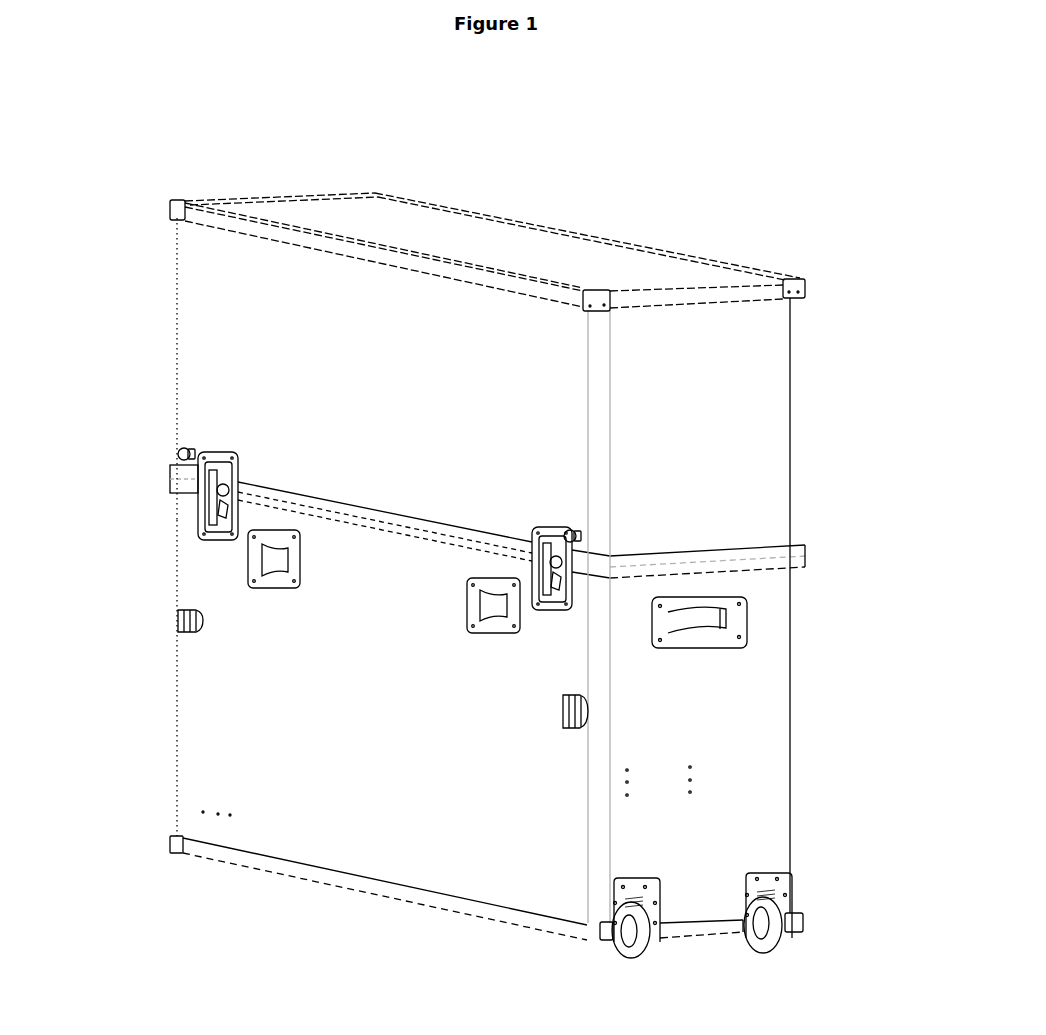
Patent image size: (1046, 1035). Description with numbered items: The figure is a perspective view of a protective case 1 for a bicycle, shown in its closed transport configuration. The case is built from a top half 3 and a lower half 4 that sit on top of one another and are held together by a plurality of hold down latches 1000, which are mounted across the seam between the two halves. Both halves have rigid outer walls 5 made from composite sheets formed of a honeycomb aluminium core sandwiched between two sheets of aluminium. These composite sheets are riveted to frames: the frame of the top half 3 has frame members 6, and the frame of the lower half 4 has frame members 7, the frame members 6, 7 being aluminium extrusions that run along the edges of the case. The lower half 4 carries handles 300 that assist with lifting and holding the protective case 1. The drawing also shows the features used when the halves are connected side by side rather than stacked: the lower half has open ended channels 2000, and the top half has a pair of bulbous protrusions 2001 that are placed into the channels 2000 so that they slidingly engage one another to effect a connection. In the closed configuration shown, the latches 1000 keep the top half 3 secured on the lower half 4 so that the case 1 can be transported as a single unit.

The protective case 1 is at (880, 425).
The top half 3 is at (164, 367).
The lower half 4 is at (162, 581).
The rigid outer walls 5 is at (492, 558).
The frame members 6 is at (696, 260).
The frame members 7 is at (353, 882).
The handles 300 is at (275, 583).
The hold down latches 1000 is at (222, 460).
The open ended channels 2000 is at (186, 633).
The bulbous protrusions 2001 is at (180, 456).